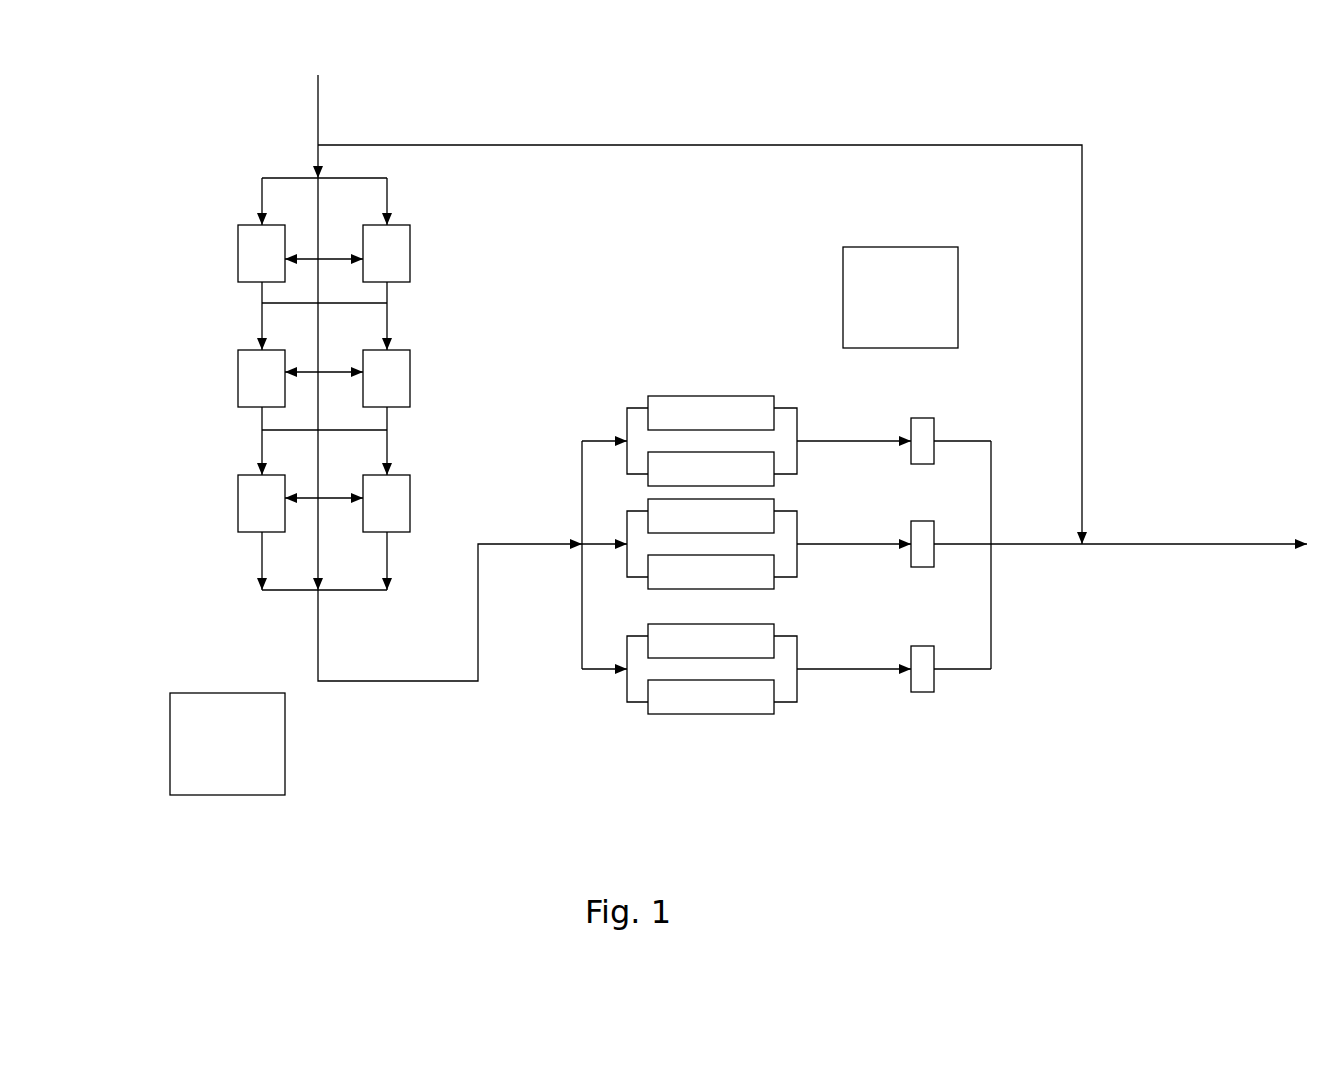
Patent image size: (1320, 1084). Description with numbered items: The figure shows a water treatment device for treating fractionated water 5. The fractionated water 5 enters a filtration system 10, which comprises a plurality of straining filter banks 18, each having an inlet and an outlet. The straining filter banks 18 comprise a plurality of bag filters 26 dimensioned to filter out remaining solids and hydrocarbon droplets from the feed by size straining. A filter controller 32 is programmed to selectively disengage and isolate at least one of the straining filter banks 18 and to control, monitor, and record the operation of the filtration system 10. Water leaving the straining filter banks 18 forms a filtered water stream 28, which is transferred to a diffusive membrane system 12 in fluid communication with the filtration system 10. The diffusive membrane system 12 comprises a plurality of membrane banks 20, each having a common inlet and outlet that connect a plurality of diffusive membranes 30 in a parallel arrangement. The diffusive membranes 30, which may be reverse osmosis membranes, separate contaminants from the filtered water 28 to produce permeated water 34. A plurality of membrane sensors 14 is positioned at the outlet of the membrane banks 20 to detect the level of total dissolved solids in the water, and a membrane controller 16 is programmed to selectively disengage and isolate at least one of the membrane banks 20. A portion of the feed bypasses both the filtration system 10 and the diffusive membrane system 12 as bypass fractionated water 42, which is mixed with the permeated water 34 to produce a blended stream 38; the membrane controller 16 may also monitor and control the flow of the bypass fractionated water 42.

The fractionated water 5 is at (318, 110).
The filtration system 10 is at (376, 368).
The diffusive membrane system 12 is at (713, 494).
The membrane sensors 14 is at (920, 545).
The membrane controller 16 is at (918, 316).
The straining filter banks 18 is at (238, 385).
The membrane banks 20 is at (637, 427).
The bag filters 26 is at (388, 508).
The filtered water stream 28 is at (457, 681).
The diffusive membranes 30 is at (673, 633).
The filter controller 32 is at (245, 783).
The permeated water 34 is at (1023, 544).
The blended stream 38 is at (1195, 544).
The bypass fractionated water 42 is at (1082, 397).